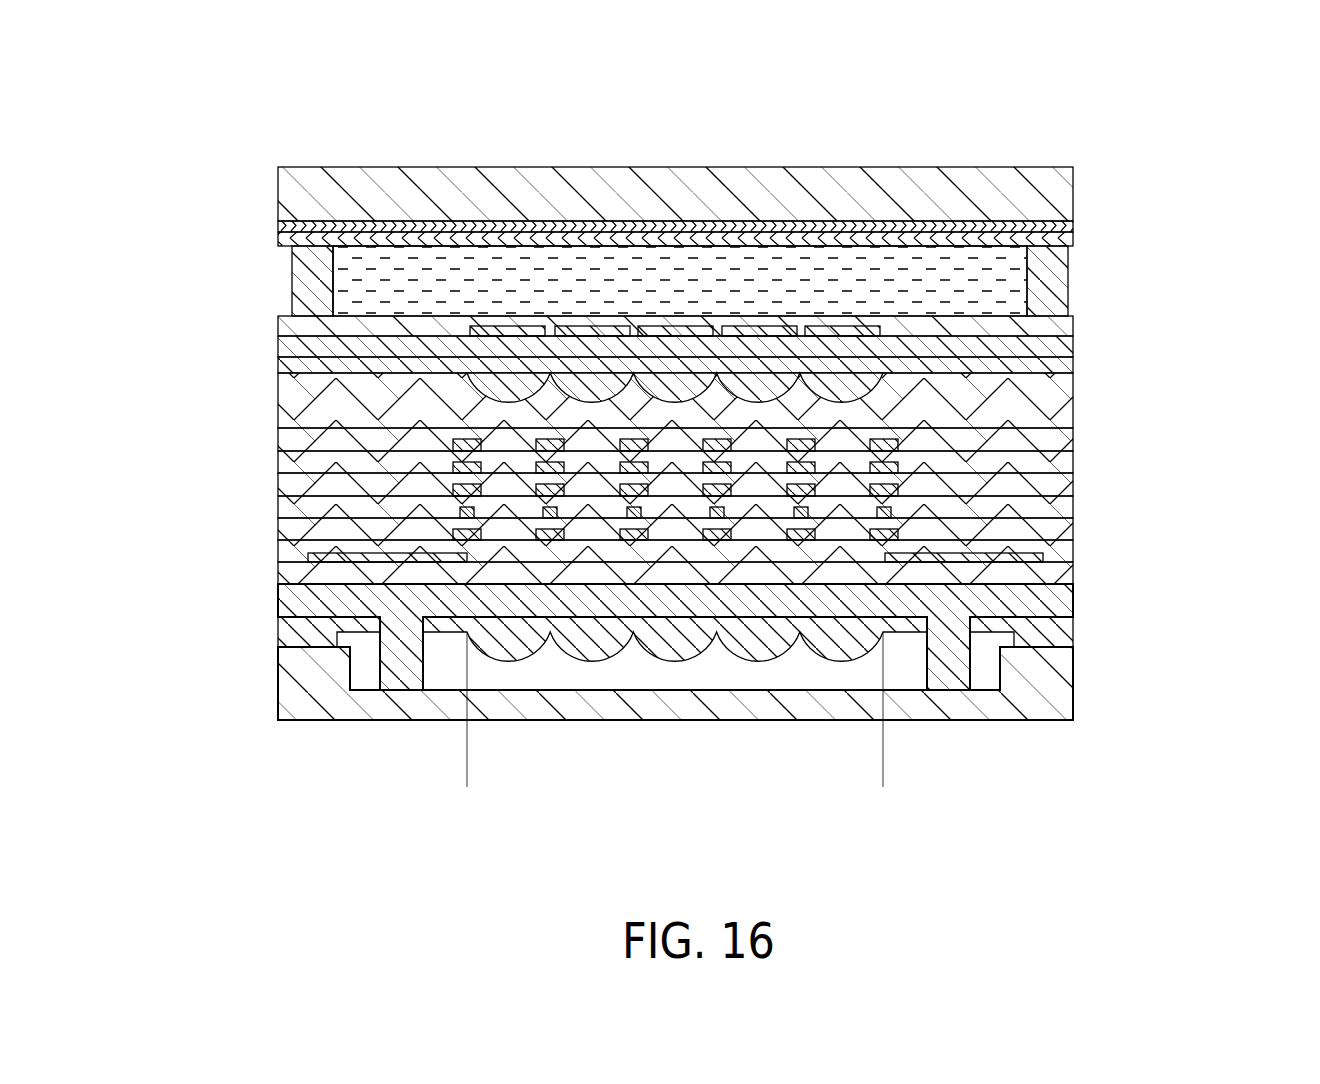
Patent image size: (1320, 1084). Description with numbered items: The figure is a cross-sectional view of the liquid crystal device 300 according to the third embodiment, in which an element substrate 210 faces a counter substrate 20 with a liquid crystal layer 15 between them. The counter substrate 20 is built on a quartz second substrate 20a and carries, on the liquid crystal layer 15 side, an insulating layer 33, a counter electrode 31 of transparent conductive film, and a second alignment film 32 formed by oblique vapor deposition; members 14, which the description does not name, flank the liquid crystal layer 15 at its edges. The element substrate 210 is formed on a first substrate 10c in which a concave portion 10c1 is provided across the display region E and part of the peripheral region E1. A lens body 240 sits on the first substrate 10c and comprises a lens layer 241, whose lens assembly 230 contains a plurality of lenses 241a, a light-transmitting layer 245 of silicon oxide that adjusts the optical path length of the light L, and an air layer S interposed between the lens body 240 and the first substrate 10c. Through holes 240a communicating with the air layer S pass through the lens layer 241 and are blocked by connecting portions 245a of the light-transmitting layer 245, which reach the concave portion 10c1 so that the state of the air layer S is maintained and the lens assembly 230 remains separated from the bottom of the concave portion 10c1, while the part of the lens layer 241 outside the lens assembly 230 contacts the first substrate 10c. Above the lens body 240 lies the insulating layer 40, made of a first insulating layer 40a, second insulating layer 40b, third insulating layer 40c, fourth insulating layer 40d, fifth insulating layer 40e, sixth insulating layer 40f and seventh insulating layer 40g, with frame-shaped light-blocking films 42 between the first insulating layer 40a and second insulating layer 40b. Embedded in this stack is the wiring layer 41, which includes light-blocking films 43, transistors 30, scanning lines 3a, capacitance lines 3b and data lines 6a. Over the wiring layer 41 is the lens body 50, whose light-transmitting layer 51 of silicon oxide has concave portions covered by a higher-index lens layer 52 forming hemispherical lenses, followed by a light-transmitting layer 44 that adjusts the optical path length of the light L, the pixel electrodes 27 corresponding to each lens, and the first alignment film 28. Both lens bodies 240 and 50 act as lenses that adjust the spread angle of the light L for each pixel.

The liquid crystal device 300 is at (1173, 101).
The counter substrate 20 is at (759, 215).
The second substrate 20a is at (1073, 172).
The insulating layer 33 is at (1073, 226).
The counter electrode 31 is at (1073, 243).
The second alignment film 32 is at (985, 255).
The seal member 14 is at (305, 298).
The liquid crystal layer 15 is at (345, 268).
The pixel electrodes 27 is at (650, 312).
The first alignment film 28 is at (1073, 324).
The light-transmitting layer 44 is at (278, 346).
The lens layer 52 is at (1073, 362).
The light-transmitting layer 51 is at (1073, 395).
The lens body 50 is at (734, 392).
The data lines 6a is at (900, 442).
The capacitance lines 3b is at (900, 466).
The scanning lines 3a is at (900, 490).
The transistors 30 is at (888, 512).
The light-blocking films 43 is at (900, 534).
The wiring layer 41 is at (821, 491).
The light-blocking films 42 is at (1043, 556).
The first insulating layer 40a is at (644, 576).
The second insulating layer 40b is at (278, 551).
The third insulating layer 40c is at (278, 529).
The fourth insulating layer 40d is at (278, 507).
The fifth insulating layer 40e is at (278, 485).
The sixth insulating layer 40f is at (278, 462).
The seventh insulating layer 40g is at (278, 440).
The insulating layer 40 is at (619, 509).
The light-transmitting layer 245 is at (278, 600).
The lens layer 241 is at (278, 625).
The lens body 240 is at (614, 637).
The first substrate 10c is at (711, 683).
The element substrate 210 is at (703, 518).
The connecting portions 245a is at (408, 678).
The through holes 240a is at (392, 662).
The lenses 241a is at (752, 643).
The lens assembly 230 is at (883, 782).
The concave portion 10c1 is at (989, 667).
The air layer S is at (560, 682).
The light L is at (672, 803).
The display region E is at (882, 147).
The peripheral region E1 is at (472, 147).